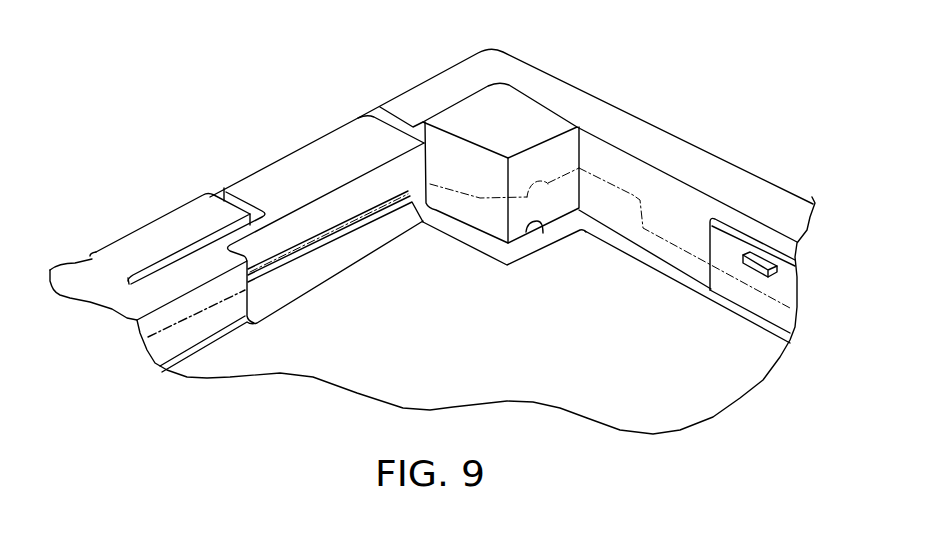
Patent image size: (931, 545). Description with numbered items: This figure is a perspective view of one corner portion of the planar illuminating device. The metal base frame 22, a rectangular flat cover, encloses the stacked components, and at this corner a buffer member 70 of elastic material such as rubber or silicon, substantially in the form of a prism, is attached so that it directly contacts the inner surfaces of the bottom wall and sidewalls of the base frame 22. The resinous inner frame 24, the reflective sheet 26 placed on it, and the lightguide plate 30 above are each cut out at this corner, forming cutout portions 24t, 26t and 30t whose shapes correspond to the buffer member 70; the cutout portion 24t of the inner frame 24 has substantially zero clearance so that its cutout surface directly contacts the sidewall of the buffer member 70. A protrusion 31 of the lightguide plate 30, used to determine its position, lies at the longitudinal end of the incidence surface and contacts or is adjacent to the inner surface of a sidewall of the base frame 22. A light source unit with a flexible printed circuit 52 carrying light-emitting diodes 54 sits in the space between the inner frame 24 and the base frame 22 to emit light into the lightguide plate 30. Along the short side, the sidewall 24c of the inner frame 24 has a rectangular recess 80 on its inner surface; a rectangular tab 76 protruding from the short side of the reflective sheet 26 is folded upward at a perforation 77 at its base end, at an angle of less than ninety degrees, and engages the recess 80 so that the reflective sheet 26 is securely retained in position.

The base frame 22 is at (607, 117).
The inner frame 24 is at (288, 170).
The sidewall 24c is at (173, 277).
The cutout portion 24t is at (541, 233).
The reflective sheet 26 is at (580, 390).
The cutout portion 26t is at (487, 252).
The lightguide plate 30 is at (667, 247).
The cutout portion 30t is at (548, 185).
The protrusion 31 is at (620, 187).
The flexible printed circuit 52 is at (725, 240).
The light-emitting diode 54 is at (762, 254).
The buffer member 70 is at (513, 113).
The tab 76 is at (360, 233).
The perforation 77 is at (319, 280).
The recess 80 is at (303, 221).